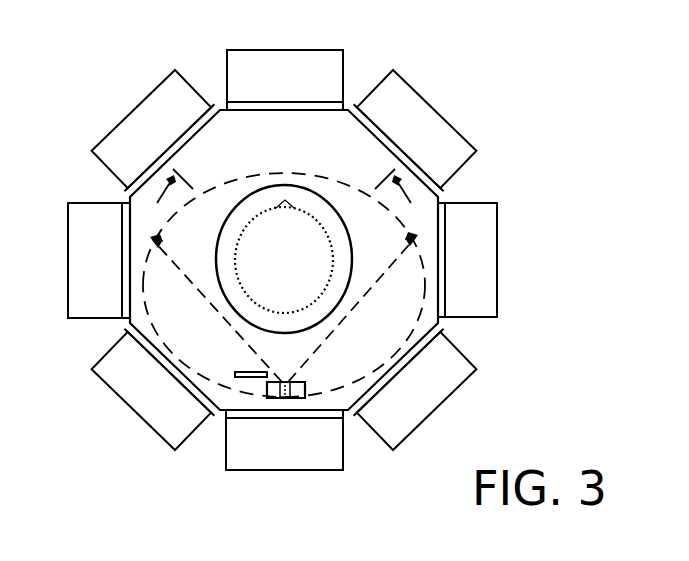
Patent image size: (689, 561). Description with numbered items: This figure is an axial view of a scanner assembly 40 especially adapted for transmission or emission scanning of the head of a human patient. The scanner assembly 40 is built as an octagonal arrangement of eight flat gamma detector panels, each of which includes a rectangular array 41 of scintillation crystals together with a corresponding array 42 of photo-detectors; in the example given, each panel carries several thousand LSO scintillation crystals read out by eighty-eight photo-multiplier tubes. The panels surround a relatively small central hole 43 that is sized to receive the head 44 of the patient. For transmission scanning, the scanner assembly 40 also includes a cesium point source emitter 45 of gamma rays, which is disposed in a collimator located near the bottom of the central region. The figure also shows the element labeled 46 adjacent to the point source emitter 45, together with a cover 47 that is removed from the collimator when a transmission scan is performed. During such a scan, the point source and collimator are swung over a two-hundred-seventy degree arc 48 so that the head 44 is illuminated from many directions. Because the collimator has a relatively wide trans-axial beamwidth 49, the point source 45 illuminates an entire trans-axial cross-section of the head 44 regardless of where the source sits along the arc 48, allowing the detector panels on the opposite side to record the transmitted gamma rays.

The scanner assembly 40 is at (454, 54).
The rectangular array of scintillation crystals 41 is at (384, 131).
The array of photo-detectors 42 is at (427, 137).
The central hole 43 is at (217, 255).
The head of patient 44 is at (243, 230).
The Cs-137 point source emitter 45 is at (285, 382).
The sensor 46 is at (293, 382).
The cover 47 is at (248, 372).
The arc 48 is at (413, 317).
The trans-axial beamwidth 49 is at (272, 173).